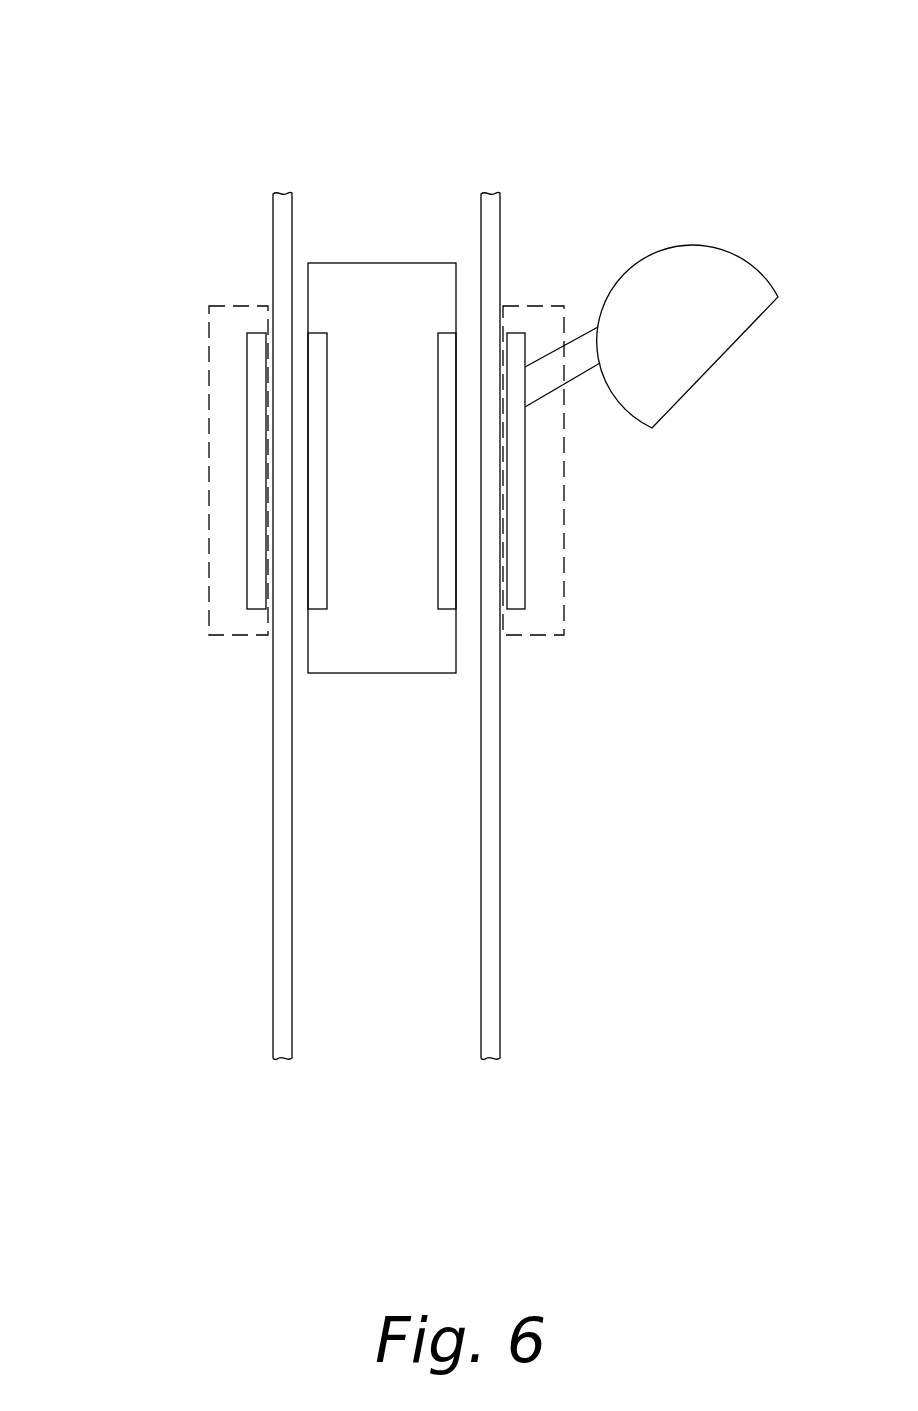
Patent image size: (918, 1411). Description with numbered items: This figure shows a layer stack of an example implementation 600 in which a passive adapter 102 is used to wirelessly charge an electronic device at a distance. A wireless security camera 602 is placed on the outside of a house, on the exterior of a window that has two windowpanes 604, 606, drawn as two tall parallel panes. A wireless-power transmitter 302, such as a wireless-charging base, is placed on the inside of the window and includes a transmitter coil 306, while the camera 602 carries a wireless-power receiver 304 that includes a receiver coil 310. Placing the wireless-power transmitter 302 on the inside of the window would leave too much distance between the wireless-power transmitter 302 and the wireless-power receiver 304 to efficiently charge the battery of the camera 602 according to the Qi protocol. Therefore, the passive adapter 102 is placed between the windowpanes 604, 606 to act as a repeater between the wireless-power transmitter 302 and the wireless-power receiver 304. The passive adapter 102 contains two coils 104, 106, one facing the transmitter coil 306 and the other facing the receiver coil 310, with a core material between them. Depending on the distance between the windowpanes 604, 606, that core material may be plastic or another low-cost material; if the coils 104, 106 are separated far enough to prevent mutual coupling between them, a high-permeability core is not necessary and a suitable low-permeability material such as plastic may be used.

The example implementation 600 is at (126, 36).
The windowpane 606 is at (275, 192).
The windowpane 604 is at (498, 195).
The passive adapter 102 is at (382, 263).
The coil 104 is at (327, 347).
The coil 106 is at (438, 402).
The wireless-power transmitter 302 is at (242, 305).
The wireless-power receiver 304 is at (527, 305).
The transmitter coil 306 is at (248, 470).
The receiver coil 310 is at (525, 473).
The wireless security camera 602 is at (702, 245).